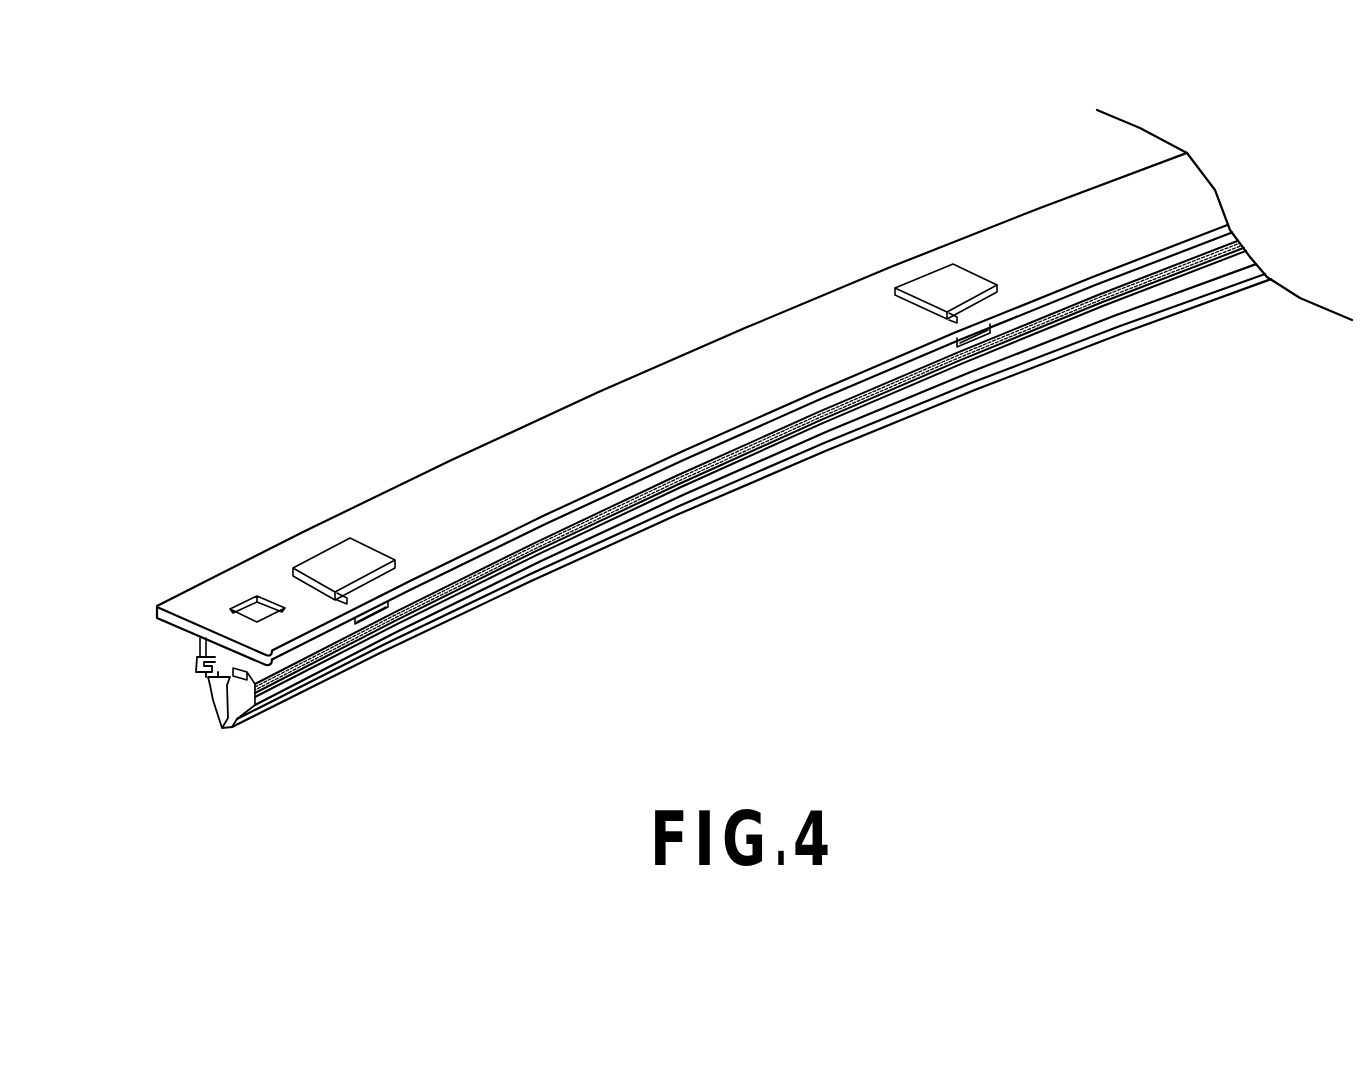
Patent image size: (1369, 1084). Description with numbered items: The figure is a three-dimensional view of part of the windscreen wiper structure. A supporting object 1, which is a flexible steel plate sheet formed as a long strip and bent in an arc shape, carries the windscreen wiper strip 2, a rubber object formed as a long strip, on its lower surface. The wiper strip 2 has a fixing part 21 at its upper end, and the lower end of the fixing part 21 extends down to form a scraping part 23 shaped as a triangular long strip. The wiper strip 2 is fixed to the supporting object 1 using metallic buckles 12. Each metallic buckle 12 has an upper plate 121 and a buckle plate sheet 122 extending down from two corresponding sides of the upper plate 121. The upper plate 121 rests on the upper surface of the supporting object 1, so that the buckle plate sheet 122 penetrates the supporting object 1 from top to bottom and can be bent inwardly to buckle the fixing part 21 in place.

The supporting object 1 is at (552, 410).
The metallic buckle 12 is at (887, 218).
The upper plate 121 is at (958, 278).
The buckle plate sheet 122 is at (977, 340).
The windscreen wiper strip 2 is at (655, 499).
The fixing part 21 is at (218, 660).
The scraping part 23 is at (295, 687).